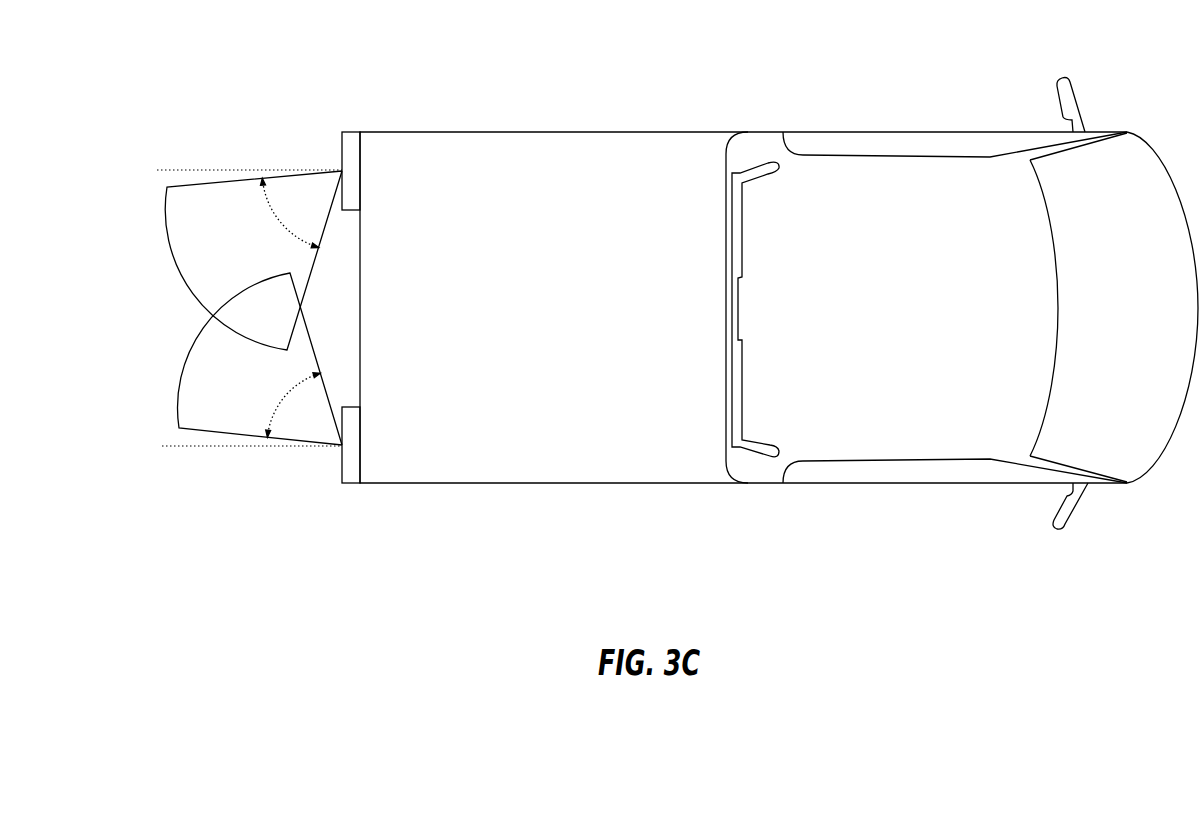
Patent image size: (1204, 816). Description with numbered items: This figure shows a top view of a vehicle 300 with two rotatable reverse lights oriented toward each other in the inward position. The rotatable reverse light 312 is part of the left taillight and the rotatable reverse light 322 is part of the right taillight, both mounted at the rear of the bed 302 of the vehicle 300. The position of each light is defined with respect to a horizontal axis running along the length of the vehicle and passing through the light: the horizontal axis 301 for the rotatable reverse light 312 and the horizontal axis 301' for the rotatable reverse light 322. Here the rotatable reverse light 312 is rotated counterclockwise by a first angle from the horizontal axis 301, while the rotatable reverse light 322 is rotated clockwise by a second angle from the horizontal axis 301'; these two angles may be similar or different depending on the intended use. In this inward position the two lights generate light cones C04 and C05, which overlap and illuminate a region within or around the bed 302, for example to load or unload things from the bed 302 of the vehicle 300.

The vehicle 300 is at (1127, 86).
The bed 302 is at (530, 314).
The rotatable reverse light 312 is at (345, 132).
The rotatable reverse light 322 is at (337, 487).
The horizontal axis 301 is at (249, 129).
The horizontal axis 301' is at (250, 486).
The light cone C04 is at (174, 262).
The light cone C05 is at (185, 371).